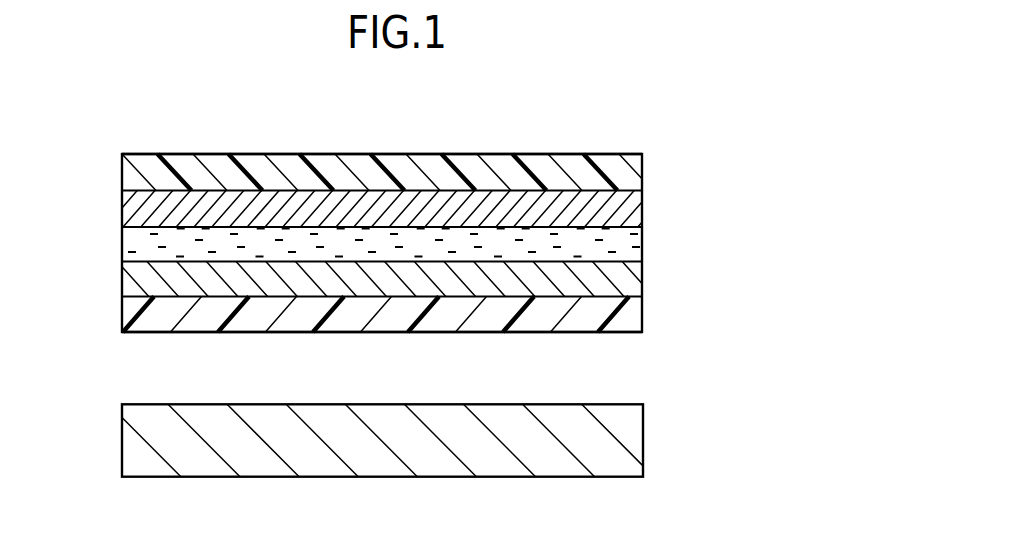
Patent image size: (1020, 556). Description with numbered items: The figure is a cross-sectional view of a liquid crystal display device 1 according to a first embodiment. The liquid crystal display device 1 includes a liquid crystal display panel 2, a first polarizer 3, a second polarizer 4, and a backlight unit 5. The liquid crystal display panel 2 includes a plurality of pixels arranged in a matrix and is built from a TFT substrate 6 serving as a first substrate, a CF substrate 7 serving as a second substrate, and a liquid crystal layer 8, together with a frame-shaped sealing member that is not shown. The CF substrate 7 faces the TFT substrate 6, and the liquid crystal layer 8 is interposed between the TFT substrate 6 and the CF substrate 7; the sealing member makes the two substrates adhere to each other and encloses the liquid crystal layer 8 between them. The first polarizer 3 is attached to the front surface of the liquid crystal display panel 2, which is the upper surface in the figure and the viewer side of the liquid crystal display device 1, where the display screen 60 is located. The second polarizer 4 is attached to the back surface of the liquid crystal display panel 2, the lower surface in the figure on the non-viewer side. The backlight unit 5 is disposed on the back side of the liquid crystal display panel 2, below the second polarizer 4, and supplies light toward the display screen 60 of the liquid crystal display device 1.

The liquid crystal display device 1 is at (633, 106).
The liquid crystal display panel 2 is at (52, 185).
The first polarizer 3 is at (627, 173).
The second polarizer 4 is at (627, 316).
The backlight unit 5 is at (627, 437).
The TFT substrate 6 is at (122, 280).
The CF substrate 7 is at (122, 203).
The liquid crystal layer 8 is at (122, 242).
The display screen 60 is at (392, 154).